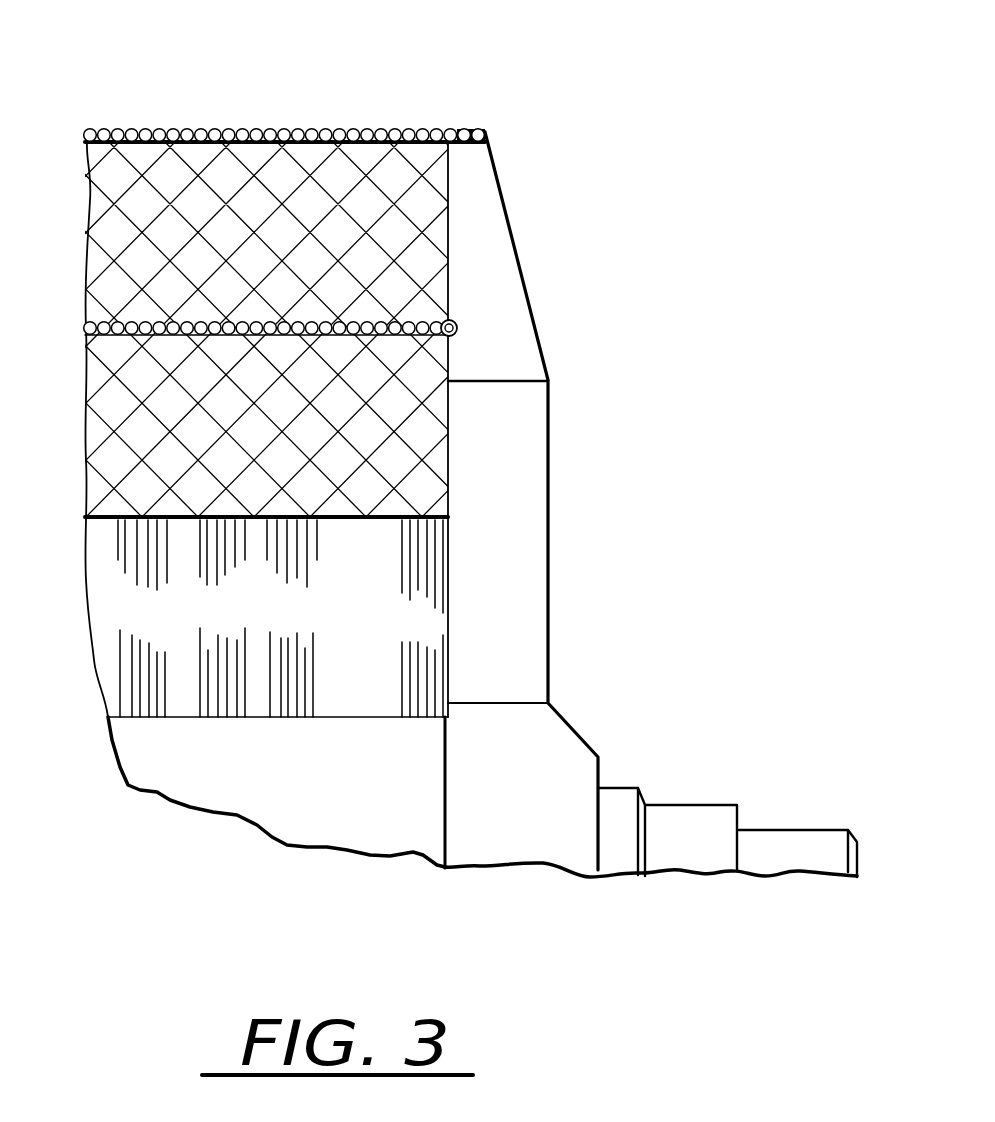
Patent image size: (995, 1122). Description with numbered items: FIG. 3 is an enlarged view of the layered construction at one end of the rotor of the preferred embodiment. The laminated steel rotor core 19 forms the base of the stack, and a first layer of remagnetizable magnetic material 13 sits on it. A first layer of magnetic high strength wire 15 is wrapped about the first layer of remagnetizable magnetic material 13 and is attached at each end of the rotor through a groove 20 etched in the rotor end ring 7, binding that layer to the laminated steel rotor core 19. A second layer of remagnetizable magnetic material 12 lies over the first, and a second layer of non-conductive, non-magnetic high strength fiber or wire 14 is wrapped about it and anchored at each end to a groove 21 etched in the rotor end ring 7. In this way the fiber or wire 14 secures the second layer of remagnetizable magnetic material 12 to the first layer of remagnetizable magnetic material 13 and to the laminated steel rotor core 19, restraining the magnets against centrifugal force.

The rotor end ring 7 is at (497, 260).
The second layer of remagnetizable magnetic material 12 is at (410, 232).
The first layer of remagnetizable magnetic material 13 is at (415, 462).
The second layer of non-conductive, non-magnetic high strength fiber or wire 14 is at (326, 130).
The first layer of magnetic high strength wire 15 is at (388, 338).
The laminated steel rotor core 19 is at (390, 615).
The groove 20 is at (460, 332).
The groove 21 is at (485, 138).